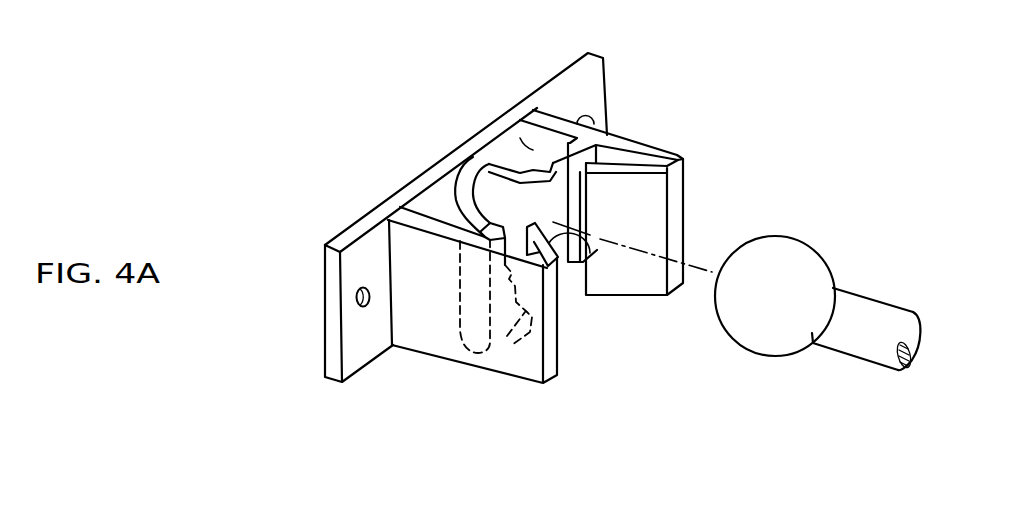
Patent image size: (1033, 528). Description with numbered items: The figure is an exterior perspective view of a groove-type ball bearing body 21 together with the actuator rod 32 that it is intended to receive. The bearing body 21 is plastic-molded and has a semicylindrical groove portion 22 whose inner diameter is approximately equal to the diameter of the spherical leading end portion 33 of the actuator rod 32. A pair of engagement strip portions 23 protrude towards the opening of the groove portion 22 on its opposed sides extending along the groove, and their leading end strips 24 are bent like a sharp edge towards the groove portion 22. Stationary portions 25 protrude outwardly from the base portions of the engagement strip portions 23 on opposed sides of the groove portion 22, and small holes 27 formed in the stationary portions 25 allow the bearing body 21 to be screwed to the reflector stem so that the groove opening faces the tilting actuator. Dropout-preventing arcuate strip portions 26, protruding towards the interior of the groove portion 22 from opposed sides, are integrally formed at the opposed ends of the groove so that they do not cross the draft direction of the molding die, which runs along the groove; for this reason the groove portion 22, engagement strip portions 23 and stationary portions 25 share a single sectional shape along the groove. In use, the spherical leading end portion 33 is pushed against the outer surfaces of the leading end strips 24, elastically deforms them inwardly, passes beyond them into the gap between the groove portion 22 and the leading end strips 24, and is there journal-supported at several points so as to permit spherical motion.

The groove-type ball bearing body 21 is at (523, 88).
The semicylindrical groove portion 22 is at (457, 165).
The engagement strip portions 23 is at (427, 340).
The leading end strips 24 is at (620, 185).
The stationary portions 25 is at (350, 350).
The dropout-preventing arcuate strip portions 26 is at (518, 135).
The small holes 27 is at (355, 296).
The actuator rod 32 is at (858, 343).
The spherical leading end portion 33 is at (752, 327).